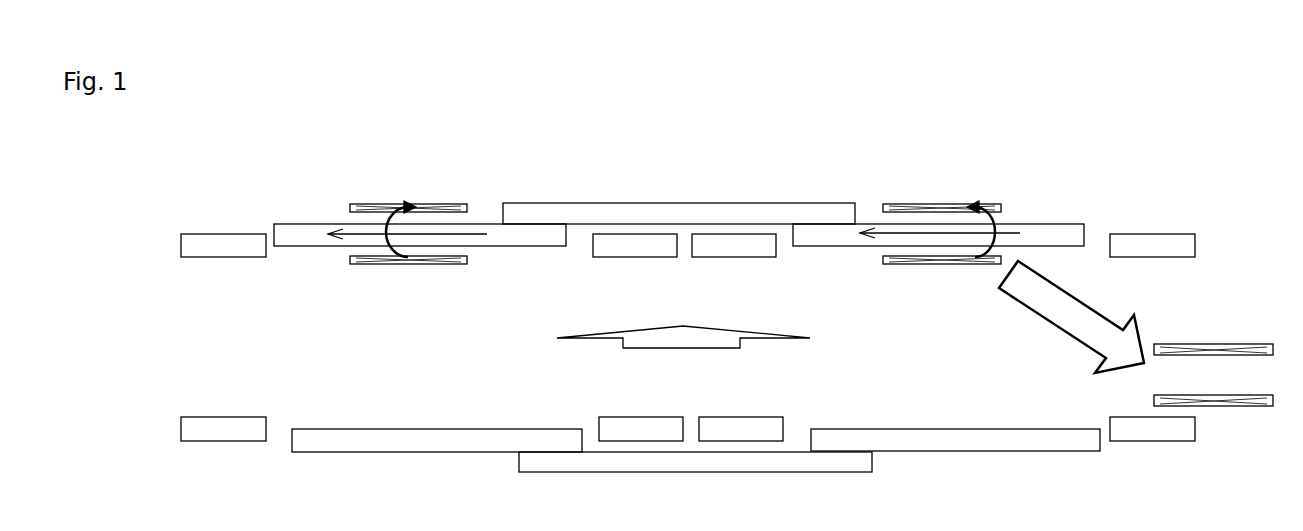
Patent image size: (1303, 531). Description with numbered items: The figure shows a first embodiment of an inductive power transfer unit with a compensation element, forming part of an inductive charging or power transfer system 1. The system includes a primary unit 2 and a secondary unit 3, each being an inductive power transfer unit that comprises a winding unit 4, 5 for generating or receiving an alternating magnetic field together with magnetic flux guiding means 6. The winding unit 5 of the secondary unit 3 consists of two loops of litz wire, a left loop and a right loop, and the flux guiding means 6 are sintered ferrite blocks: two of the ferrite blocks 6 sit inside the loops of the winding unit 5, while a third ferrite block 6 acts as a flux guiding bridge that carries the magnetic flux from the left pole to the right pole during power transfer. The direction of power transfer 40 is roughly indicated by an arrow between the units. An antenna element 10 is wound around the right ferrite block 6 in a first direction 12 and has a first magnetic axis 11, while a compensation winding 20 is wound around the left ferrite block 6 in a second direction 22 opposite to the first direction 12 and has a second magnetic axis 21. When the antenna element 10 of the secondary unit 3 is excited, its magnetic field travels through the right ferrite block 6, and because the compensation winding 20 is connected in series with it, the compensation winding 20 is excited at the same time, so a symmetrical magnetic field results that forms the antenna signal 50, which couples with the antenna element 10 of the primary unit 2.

The power transfer system 1 is at (118, 173).
The primary unit 2 is at (246, 344).
The secondary unit 3 is at (231, 121).
The winding unit 4 is at (221, 425).
The winding unit 5 is at (232, 245).
The magnetic flux guiding means 6 is at (500, 233).
The antenna element 10 is at (918, 257).
The first magnetic axis 11 is at (882, 233).
The first direction 12 is at (982, 208).
The compensation winding 20 is at (360, 257).
The second magnetic axis 21 is at (437, 232).
The second direction 22 is at (397, 204).
The direction of power transfer 40 is at (712, 338).
The antenna signal 50 is at (1067, 320).